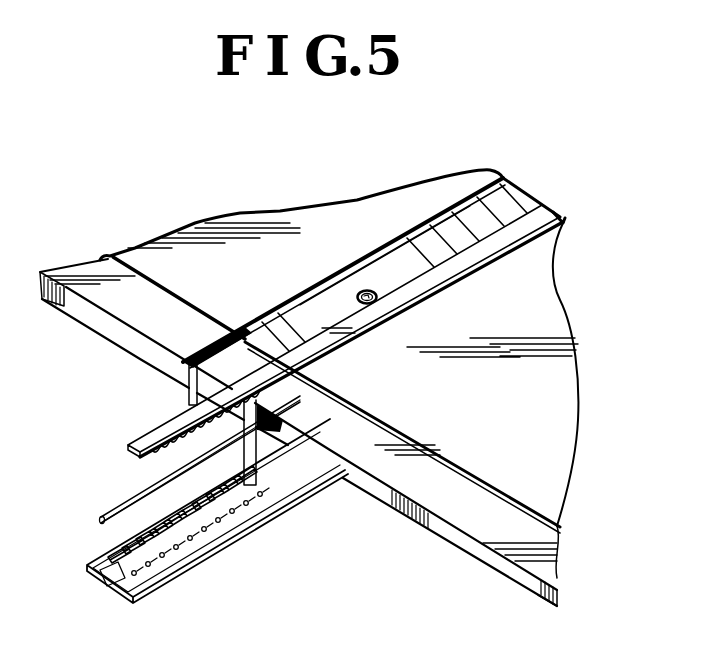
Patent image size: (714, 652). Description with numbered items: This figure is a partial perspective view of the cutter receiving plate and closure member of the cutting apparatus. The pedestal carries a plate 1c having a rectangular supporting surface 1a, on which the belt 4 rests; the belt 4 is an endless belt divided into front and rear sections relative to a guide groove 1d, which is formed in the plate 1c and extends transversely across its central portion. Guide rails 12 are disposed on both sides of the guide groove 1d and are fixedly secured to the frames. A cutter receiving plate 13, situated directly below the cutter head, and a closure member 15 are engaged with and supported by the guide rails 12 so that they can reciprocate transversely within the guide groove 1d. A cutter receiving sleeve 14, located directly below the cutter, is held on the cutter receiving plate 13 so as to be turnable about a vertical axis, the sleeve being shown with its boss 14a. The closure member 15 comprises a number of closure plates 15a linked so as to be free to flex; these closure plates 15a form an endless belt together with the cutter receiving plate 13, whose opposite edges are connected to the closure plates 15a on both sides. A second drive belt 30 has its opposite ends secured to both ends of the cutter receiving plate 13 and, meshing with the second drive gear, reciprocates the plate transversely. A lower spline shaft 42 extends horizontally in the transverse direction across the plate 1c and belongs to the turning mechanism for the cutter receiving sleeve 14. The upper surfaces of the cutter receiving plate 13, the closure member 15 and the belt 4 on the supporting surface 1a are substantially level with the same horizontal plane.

The supporting surface 1a is at (513, 528).
The plate 1c is at (461, 539).
The guide groove 1d is at (189, 380).
The belt 4 is at (437, 322).
The guide rails 12 is at (266, 463).
The cutter receiving plate 13 is at (440, 275).
The cutter receiving sleeve 14 is at (365, 288).
The pivot boss 14a is at (374, 318).
The closure member 15 is at (524, 190).
The closure plates 15a is at (482, 223).
The second drive belt 30 is at (152, 523).
The lower spline shaft 42 is at (101, 520).